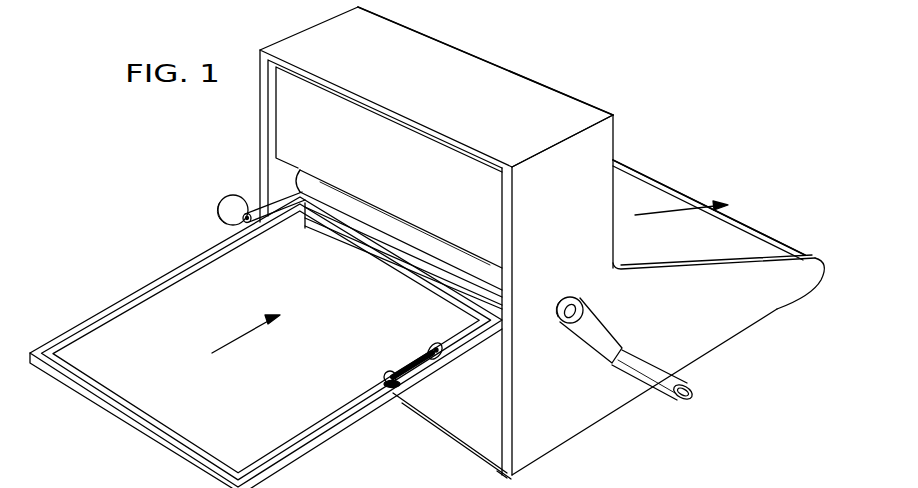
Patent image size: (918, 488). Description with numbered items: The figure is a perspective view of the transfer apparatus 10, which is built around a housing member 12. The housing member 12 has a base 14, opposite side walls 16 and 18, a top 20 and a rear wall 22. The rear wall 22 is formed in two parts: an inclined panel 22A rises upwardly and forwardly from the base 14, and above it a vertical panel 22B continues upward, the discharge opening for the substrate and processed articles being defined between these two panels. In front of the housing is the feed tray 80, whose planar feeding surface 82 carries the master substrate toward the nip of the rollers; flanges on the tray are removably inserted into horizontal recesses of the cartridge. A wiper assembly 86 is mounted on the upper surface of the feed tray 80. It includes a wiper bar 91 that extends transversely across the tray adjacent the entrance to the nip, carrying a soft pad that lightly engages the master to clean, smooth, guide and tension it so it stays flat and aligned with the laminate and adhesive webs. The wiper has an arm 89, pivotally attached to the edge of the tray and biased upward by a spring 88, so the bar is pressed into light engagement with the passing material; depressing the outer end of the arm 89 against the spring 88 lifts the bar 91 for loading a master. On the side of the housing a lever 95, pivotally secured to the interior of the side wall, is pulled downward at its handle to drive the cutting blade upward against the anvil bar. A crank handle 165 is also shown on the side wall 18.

The transfer apparatus 10 is at (516, 68).
The housing member 12 is at (607, 135).
The base 14 is at (565, 440).
The side wall 16 is at (260, 122).
The side wall 18 is at (578, 248).
The top 20 is at (549, 102).
The rear wall 22 is at (727, 237).
The inclined panel 22A is at (803, 252).
The vertical panel 22B is at (617, 160).
The feed tray 80 is at (326, 446).
The planar feeding surface 82 is at (344, 368).
The wiper assembly 86 is at (400, 265).
The spring 88 is at (388, 386).
The arm 89 is at (410, 360).
The wiper bar 91 is at (347, 220).
The lever 95 is at (266, 200).
The crank handle 165 is at (645, 392).